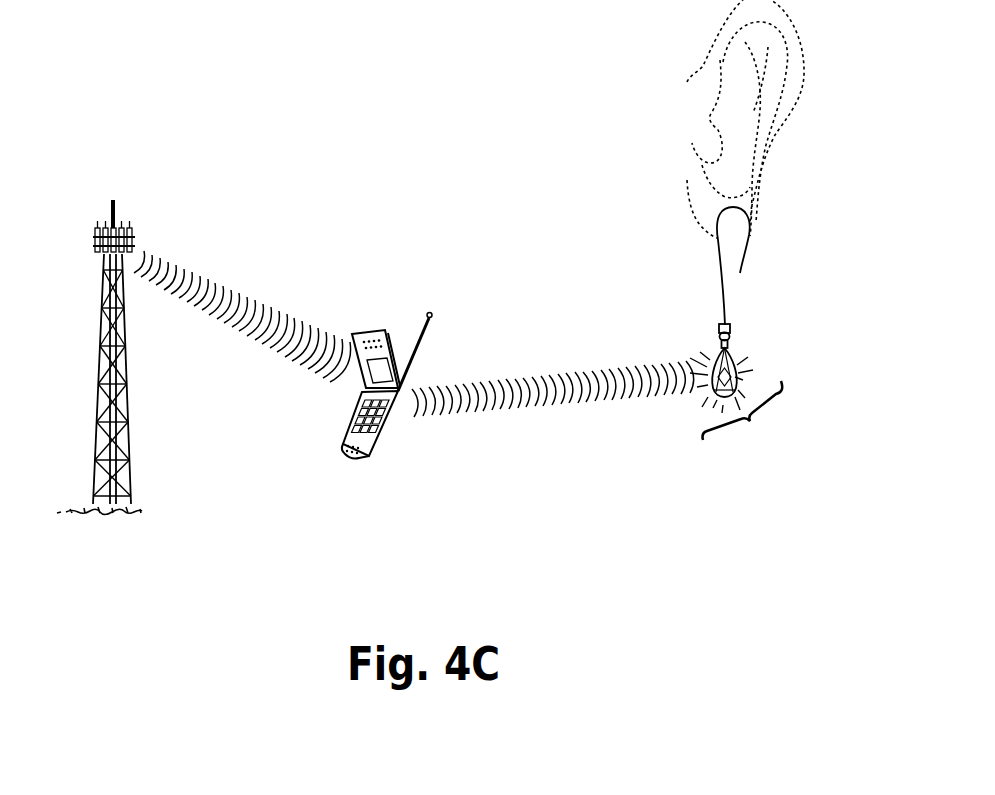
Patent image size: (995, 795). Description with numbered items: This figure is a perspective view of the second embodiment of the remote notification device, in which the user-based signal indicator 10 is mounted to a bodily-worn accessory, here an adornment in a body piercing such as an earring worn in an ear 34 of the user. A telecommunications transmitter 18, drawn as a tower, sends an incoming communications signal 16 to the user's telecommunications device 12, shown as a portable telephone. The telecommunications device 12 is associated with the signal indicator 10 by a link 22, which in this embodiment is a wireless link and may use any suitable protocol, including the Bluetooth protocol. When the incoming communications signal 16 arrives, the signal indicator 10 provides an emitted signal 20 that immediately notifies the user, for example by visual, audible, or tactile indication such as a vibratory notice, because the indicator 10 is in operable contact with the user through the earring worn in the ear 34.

The user-based signal indicator 10 is at (733, 373).
The telecommunications device 12 is at (373, 330).
The incoming communications signal 16 is at (216, 282).
The telecommunications transmitter 18 is at (103, 314).
The emitted signal 20 is at (743, 420).
The link 22 is at (471, 379).
The ear 34 is at (747, 132).